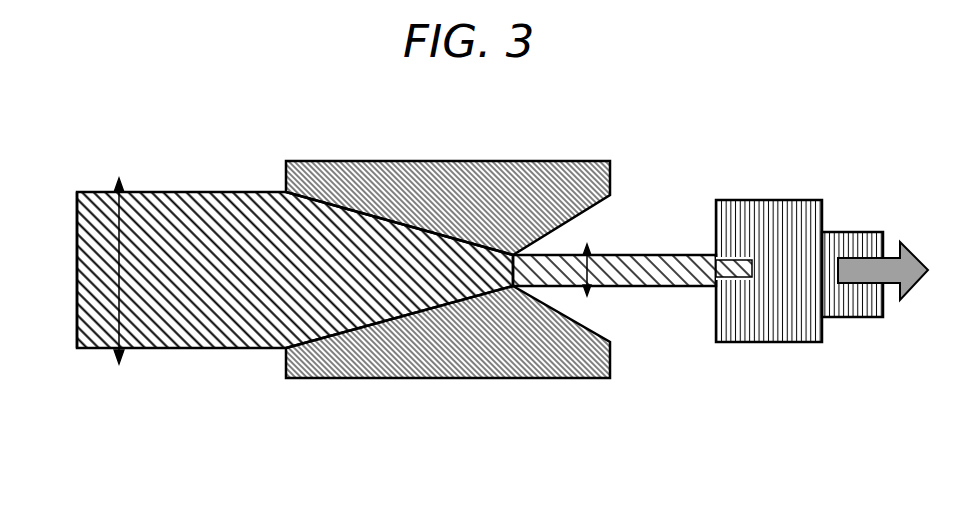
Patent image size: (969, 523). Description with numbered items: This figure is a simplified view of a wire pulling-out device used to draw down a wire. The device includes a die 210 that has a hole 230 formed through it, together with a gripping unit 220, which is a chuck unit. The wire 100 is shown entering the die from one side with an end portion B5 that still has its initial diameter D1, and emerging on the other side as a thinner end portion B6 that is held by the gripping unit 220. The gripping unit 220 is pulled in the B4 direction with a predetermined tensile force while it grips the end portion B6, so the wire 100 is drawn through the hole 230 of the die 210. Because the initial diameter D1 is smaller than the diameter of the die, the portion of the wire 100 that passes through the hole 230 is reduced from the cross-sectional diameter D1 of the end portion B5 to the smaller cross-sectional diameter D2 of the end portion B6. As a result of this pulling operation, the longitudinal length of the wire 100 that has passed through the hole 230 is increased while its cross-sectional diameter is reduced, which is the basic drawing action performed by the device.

The wire 100 is at (178, 218).
The die 210 is at (510, 235).
The hole 230 is at (586, 182).
The gripping unit 220 is at (757, 232).
The pulling direction B4 is at (877, 272).
The end portion of the wire with initial diameter B5 is at (77, 280).
The end portion of the wire gripped by the gripping unit B6 is at (640, 267).
The initial diameter D1 is at (117, 312).
The reduced cross-sectional diameter D2 is at (610, 288).